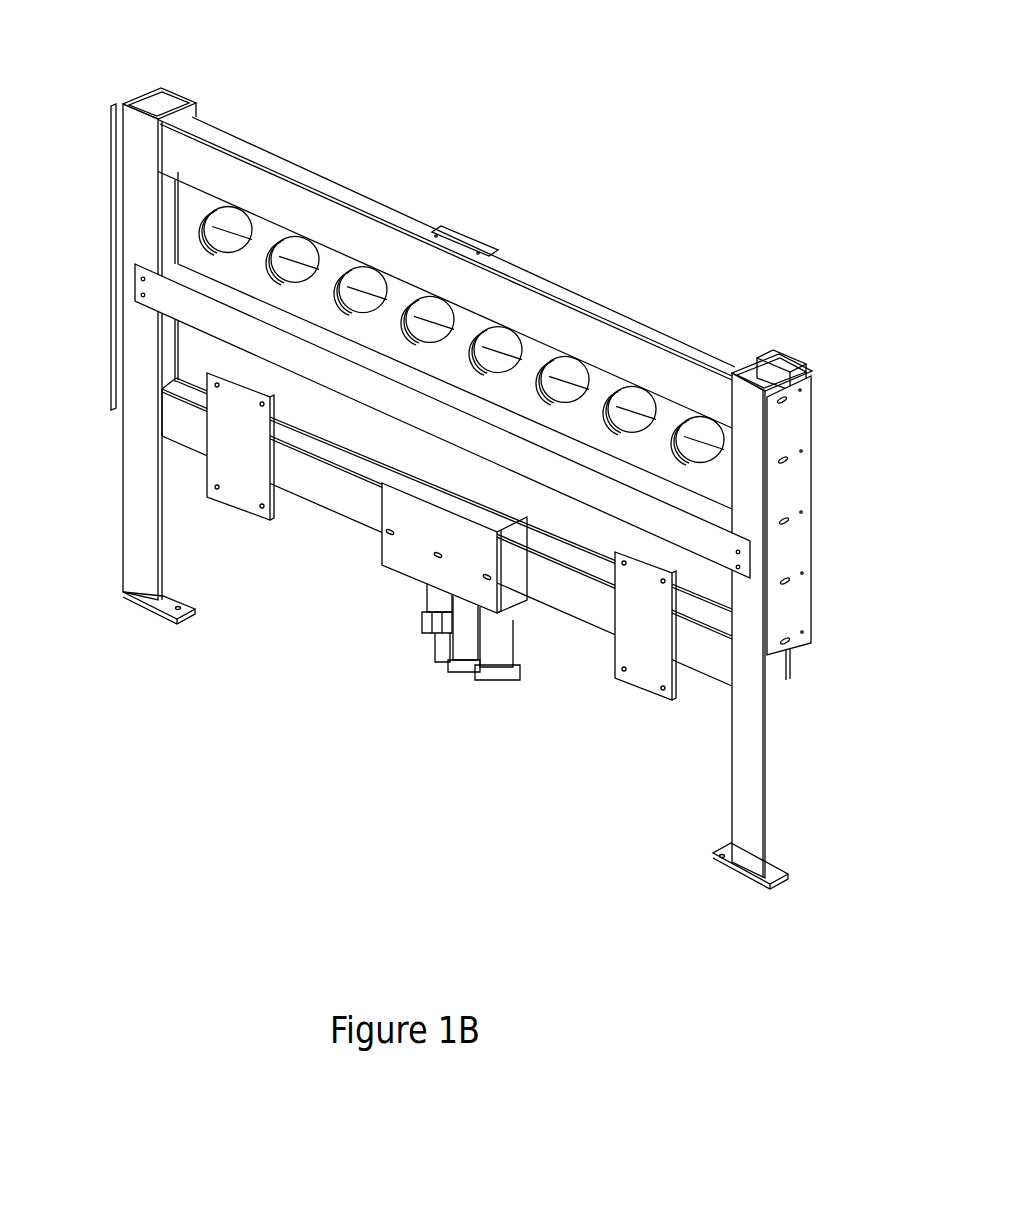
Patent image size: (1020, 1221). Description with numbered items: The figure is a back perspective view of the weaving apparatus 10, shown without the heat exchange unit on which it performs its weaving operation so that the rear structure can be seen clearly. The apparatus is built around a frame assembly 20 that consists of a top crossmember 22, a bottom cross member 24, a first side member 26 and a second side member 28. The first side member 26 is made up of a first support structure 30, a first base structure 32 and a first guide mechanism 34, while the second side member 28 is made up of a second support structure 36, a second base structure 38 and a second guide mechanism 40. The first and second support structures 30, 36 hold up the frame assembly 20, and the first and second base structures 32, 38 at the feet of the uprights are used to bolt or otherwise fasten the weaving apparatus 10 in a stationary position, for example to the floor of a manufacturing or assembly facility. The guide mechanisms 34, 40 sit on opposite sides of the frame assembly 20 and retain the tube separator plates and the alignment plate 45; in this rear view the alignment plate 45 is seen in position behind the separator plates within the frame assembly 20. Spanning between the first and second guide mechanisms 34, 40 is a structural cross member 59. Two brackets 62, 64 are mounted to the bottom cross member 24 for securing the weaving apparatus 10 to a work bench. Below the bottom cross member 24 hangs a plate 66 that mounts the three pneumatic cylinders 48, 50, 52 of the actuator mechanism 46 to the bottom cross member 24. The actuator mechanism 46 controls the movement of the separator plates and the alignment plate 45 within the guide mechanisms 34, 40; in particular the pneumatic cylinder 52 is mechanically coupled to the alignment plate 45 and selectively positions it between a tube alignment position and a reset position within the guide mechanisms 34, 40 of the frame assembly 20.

The weaving apparatus 10 is at (466, 463).
The frame assembly 20 is at (466, 463).
The top crossmember 22 is at (326, 218).
The bottom cross member 24 is at (320, 490).
The first side member 26 is at (147, 365).
The second side member 28 is at (772, 634).
The first support structure 30 is at (133, 531).
The first base structure 32 is at (197, 605).
The first guide mechanism 34 is at (133, 198).
The second support structure 36 is at (777, 747).
The second base structure 38 is at (713, 856).
The second guide mechanism 40 is at (797, 486).
The alignment plate 45 is at (407, 350).
The actuator mechanism 46 is at (457, 623).
The pneumatic cylinder 48 is at (428, 612).
The pneumatic cylinder 50 is at (468, 672).
The pneumatic cylinder 52 is at (500, 676).
The structural cross member 59 is at (414, 414).
The bracket 62 is at (223, 455).
The bracket 64 is at (628, 632).
The plate 66 is at (426, 545).